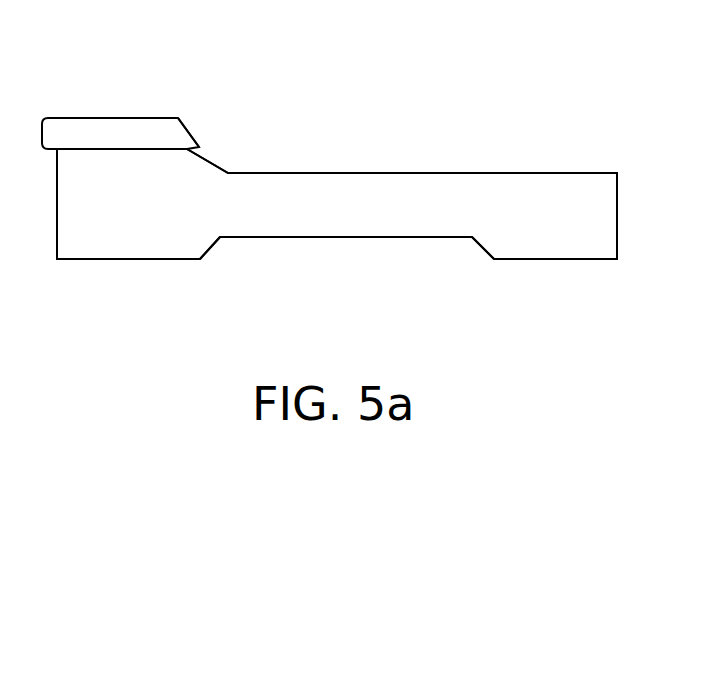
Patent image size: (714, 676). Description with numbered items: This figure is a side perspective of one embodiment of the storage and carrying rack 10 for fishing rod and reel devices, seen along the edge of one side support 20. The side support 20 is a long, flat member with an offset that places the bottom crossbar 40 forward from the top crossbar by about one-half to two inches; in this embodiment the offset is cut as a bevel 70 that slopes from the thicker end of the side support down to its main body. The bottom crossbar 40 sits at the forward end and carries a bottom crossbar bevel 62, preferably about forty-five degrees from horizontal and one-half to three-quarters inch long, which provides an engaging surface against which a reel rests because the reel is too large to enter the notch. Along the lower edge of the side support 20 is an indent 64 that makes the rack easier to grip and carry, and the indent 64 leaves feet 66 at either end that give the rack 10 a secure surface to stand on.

The storage and carrying rack 10 is at (504, 52).
The side support 20 is at (122, 248).
The bottom crossbar 40 is at (100, 118).
The bottom crossbar bevel 62 is at (190, 134).
The indent 64 is at (363, 237).
The feet 66 is at (202, 260).
The bevel 70 is at (218, 165).